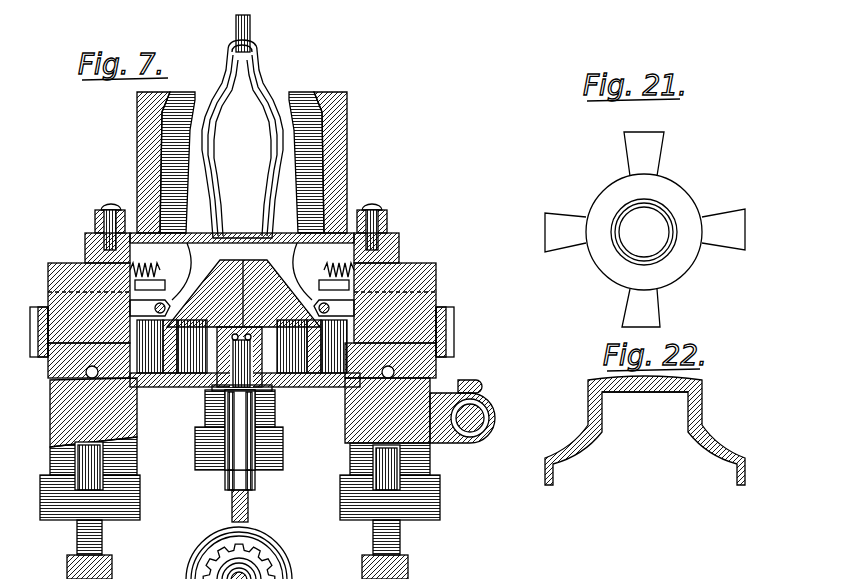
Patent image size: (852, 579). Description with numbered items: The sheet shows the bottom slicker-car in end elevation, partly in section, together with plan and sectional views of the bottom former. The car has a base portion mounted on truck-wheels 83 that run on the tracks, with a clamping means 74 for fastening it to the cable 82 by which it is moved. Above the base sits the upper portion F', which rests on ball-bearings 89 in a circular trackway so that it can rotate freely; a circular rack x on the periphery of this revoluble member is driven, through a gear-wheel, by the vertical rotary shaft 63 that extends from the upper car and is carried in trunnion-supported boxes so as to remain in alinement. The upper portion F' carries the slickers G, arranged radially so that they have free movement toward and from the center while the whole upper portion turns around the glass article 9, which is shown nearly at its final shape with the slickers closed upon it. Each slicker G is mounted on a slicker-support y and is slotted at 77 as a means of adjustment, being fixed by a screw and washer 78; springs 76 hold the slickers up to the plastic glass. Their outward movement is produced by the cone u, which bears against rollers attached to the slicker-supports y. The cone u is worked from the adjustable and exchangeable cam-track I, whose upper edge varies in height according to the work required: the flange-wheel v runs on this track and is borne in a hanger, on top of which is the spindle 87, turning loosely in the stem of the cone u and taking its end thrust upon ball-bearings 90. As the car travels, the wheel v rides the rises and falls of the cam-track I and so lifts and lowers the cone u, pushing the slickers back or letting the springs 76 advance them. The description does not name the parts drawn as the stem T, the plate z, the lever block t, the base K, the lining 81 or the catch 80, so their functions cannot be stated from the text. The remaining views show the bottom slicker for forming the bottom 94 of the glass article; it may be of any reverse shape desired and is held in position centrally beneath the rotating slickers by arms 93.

In FIG. 7, the stem T is at (250, 33).
In FIG. 7, the glass article 9 is at (242, 139).
In FIG. 7, the slickers G is at (240, 162).
In FIG. 7, the mold lining 81 is at (242, 162).
In FIG. 7, the plate z is at (242, 244).
In FIG. 21, the plate z is at (644, 232).
In FIG. 22, the plate z is at (645, 401).
In FIG. 7, the screw and washer 78 is at (248, 198).
In FIG. 7, the slot 77 is at (95, 221).
In FIG. 7, the slicker-supports y is at (237, 248).
In FIG. 7, the circular rack x is at (236, 310).
In FIG. 7, the upper portion F' is at (233, 405).
In FIG. 7, the cone u is at (243, 293).
In FIG. 7, the flange-wheel v is at (270, 405).
In FIG. 7, the springs 76 is at (242, 262).
In FIG. 7, the catch 80 is at (242, 298).
In FIG. 7, the ball-bearings 89 is at (86, 376).
In FIG. 7, the lever block t is at (137, 418).
In FIG. 7, the cable 82 is at (495, 418).
In FIG. 7, the clamping means 74 is at (480, 383).
In FIG. 7, the truck-wheels 83 is at (235, 537).
In FIG. 7, the base K is at (233, 567).
In FIG. 7, the ball-bearings 90 is at (205, 392).
In FIG. 7, the spindle 87 is at (280, 384).
In FIG. 7, the cam-track I is at (229, 506).
In FIG. 7, the vertical rotary shaft 63 is at (258, 572).
In FIG. 21, the arms 93 is at (645, 229).
In FIG. 22, the bottom of glass article 94 is at (645, 423).